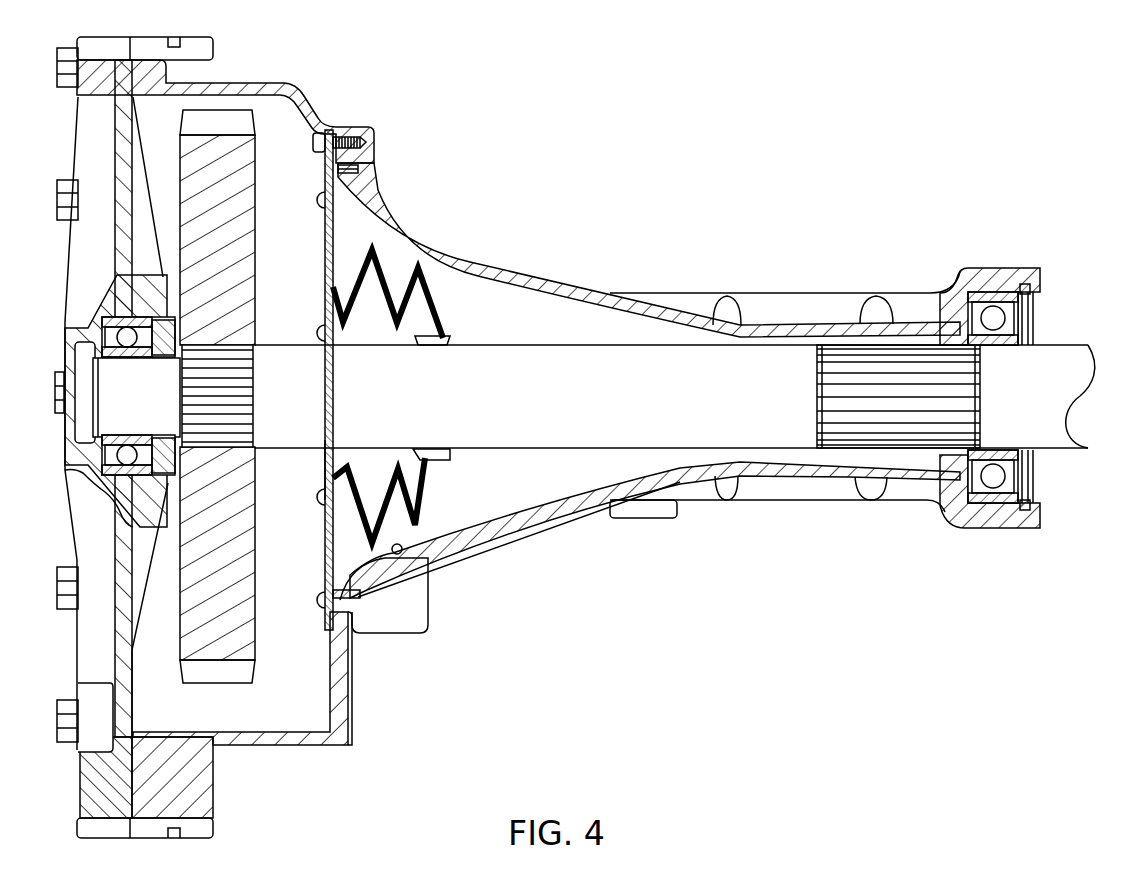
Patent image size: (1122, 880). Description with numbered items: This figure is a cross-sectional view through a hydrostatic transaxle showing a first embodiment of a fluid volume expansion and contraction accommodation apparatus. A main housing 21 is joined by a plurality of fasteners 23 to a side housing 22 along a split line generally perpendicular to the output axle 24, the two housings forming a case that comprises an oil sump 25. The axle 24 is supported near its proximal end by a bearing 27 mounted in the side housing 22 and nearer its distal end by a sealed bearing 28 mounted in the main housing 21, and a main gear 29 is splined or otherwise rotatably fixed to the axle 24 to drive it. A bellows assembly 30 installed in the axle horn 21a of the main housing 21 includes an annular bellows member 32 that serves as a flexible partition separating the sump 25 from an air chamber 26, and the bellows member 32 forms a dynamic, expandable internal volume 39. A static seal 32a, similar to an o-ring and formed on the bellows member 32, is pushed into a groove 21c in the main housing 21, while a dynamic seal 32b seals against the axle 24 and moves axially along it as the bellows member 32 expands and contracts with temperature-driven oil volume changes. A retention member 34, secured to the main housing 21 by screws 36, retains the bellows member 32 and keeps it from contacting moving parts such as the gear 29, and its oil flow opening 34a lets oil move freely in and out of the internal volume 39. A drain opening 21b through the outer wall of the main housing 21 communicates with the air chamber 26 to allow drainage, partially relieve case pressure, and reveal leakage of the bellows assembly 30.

The main housing 21 is at (147, 97).
The axle horn 21a is at (461, 255).
The drain opening 21b is at (440, 540).
The groove 21c is at (362, 588).
The side housing 22 is at (97, 73).
The fasteners 23 is at (56, 66).
The output axle 24 is at (549, 406).
The oil sump 25 is at (303, 704).
The air chamber 26 is at (544, 486).
The bearing 27 is at (100, 308).
The sealed bearing 28 is at (993, 318).
The main gear 29 is at (218, 643).
The bellows assembly 30 is at (482, 188).
The bellows member 32 is at (428, 297).
The static seal 32a is at (348, 168).
The dynamic seal 32b is at (445, 337).
The retention member 34 is at (325, 540).
The oil flow opening 34a is at (326, 467).
The screws 36 is at (315, 146).
The internal volume 39 is at (372, 463).